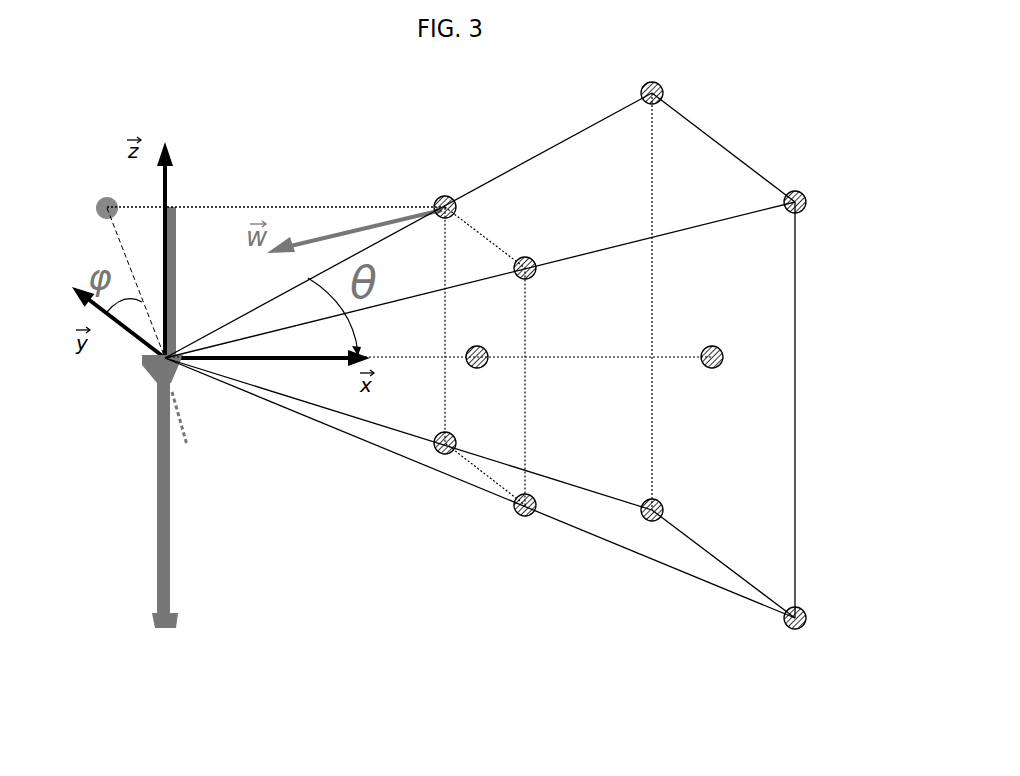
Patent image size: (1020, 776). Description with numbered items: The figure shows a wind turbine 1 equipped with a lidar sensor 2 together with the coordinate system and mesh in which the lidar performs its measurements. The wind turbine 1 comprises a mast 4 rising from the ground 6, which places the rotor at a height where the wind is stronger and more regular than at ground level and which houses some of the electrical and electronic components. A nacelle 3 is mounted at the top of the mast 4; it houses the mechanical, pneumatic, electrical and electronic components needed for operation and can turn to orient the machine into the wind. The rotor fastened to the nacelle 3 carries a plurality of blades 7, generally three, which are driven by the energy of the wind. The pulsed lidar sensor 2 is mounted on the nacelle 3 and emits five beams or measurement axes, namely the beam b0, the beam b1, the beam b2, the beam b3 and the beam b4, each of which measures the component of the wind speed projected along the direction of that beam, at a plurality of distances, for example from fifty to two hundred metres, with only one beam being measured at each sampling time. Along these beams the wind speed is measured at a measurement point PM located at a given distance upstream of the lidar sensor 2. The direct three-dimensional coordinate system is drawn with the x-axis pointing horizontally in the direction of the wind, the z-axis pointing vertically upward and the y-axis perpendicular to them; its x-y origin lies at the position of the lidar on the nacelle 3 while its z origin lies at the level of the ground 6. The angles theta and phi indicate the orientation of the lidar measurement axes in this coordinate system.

The wind turbine 1 is at (201, 203).
The lidar sensor 2 is at (140, 360).
The nacelle 3 is at (158, 390).
The mast 4 is at (157, 520).
The ground 6 is at (153, 623).
The blades 7 is at (189, 449).
The beam b0 is at (589, 364).
The beam b1 is at (490, 178).
The beam b2 is at (734, 224).
The beam b3 is at (612, 548).
The beam b4 is at (385, 430).
The measurement point PM is at (514, 507).